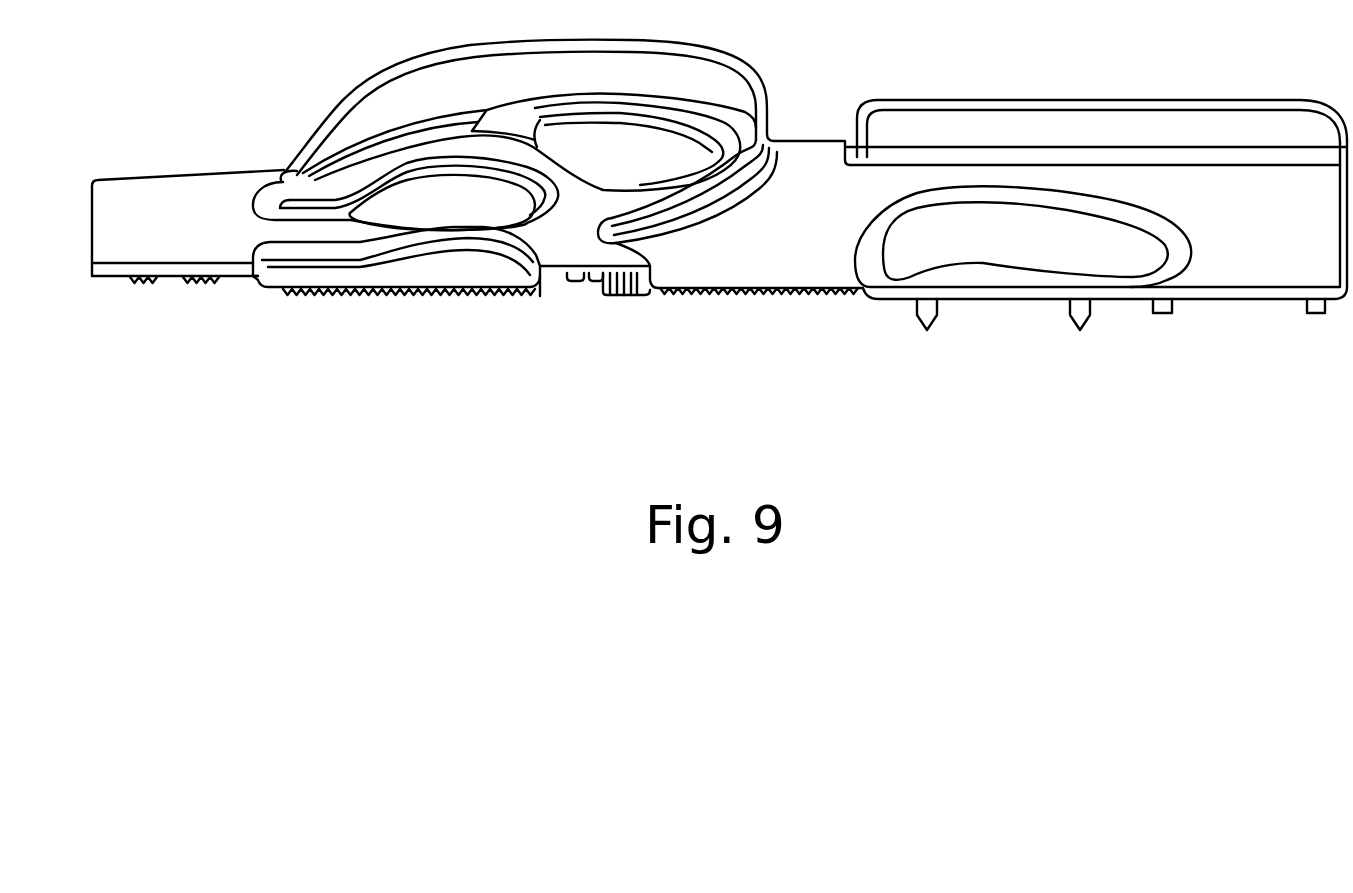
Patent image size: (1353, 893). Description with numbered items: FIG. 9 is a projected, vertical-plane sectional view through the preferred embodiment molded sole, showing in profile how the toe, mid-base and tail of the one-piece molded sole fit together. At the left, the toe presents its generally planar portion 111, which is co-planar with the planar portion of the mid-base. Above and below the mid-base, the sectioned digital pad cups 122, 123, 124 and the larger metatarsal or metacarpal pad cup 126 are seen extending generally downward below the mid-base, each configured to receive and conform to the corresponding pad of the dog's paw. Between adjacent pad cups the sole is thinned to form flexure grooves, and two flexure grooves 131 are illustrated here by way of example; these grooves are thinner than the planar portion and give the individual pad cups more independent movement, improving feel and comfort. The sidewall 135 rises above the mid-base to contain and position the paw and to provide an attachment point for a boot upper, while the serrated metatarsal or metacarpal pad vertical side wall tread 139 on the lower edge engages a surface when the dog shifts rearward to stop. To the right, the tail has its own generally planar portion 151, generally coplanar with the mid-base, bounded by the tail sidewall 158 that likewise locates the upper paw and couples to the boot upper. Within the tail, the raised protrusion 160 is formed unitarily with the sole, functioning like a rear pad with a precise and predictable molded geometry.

The generally planar portion 111 is at (181, 244).
The digital pad cup 122 is at (636, 174).
The digital pad cup 123 is at (469, 214).
The digital pad cup 124 is at (420, 284).
The metatarsal or metacarpal pad cup 126 is at (733, 256).
The flexure groove 131 is at (582, 276).
The sidewall 135 is at (629, 82).
The metatarsal or metacarpal pad vertical side wall tread 139 is at (602, 276).
The generally planar portion 151 is at (1279, 256).
The tail sidewall 158 is at (1171, 139).
The raised protrusion 160 is at (1009, 246).